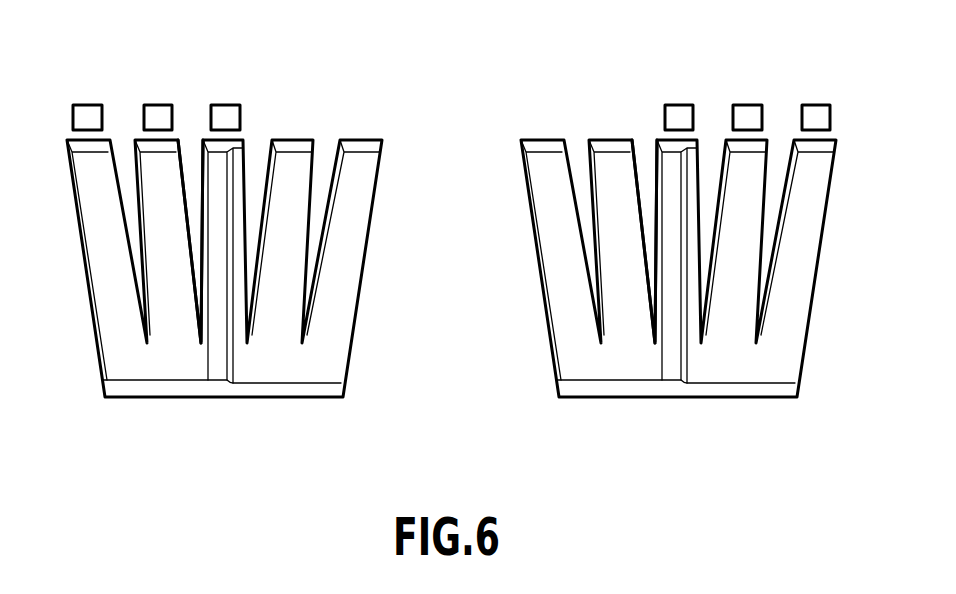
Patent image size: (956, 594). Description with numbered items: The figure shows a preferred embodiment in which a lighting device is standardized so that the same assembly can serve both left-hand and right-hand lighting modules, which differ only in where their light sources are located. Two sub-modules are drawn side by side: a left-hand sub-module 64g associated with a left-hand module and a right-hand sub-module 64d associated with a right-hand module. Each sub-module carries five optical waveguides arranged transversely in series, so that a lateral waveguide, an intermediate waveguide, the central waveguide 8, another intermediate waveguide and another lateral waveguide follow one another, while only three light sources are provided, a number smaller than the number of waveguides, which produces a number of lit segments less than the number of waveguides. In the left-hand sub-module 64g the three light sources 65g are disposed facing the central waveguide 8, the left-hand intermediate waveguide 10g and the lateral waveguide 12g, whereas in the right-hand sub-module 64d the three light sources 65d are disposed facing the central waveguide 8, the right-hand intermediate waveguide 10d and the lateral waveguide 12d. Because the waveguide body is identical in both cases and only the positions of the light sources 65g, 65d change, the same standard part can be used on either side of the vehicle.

The central waveguide 8 is at (218, 292).
The right-hand intermediate waveguide 10d is at (156, 201).
The left-hand intermediate waveguide 10g is at (745, 205).
The lateral waveguide 12d is at (105, 268).
The lateral waveguide 12g is at (790, 270).
The right-hand sub-module 64d is at (226, 403).
The left-hand sub-module 64g is at (696, 406).
The light sources 65d is at (220, 118).
The light sources 65g is at (808, 118).